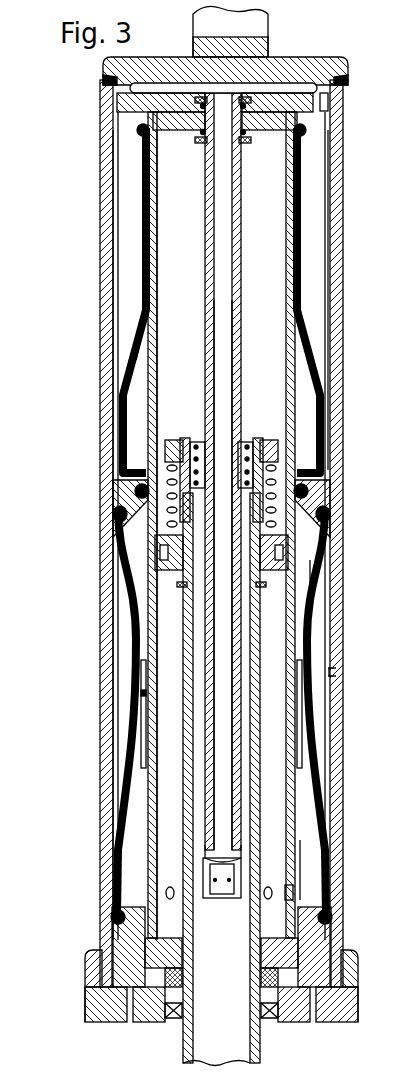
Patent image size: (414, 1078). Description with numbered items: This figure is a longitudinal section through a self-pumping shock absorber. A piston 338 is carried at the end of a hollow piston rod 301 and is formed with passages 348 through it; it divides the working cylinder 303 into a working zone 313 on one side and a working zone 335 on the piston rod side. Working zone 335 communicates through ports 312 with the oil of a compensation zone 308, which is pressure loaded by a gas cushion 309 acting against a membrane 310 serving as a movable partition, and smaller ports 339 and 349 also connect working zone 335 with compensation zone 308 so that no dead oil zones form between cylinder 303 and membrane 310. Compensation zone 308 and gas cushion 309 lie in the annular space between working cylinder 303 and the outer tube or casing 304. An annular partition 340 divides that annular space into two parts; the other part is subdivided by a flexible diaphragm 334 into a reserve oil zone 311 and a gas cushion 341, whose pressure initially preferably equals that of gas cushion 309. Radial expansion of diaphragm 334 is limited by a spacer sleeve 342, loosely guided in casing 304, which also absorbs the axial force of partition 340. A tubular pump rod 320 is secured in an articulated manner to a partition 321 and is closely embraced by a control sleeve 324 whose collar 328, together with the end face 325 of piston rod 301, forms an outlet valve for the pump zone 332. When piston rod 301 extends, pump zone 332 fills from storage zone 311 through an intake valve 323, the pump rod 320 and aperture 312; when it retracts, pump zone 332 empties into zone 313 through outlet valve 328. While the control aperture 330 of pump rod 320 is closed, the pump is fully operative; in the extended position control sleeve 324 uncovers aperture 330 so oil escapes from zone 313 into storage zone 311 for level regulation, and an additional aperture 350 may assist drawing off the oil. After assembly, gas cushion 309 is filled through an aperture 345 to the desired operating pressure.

The hollow piston rod 301 is at (188, 731).
The working cylinder 303 is at (155, 636).
The outer tube or casing 304 is at (108, 530).
The compensation zone 308 is at (303, 862).
The gas cushion 309 is at (322, 708).
The membrane 310 is at (312, 766).
The inner tube 311 is at (128, 168).
The apertures or ports 312 is at (325, 106).
The working zone 313 is at (176, 198).
The tubular pump rod 320 is at (207, 278).
The partition 321 is at (125, 97).
The intake valve 323 is at (225, 850).
The control sleeve 324 is at (245, 618).
The end face of piston rod 325 is at (185, 505).
The collar (outlet valve) 328 is at (265, 483).
The control aperture 330 is at (200, 455).
The pump zone 332 is at (218, 928).
The flexible diaphragm or membrane 334 is at (143, 258).
The working zone 335 is at (172, 681).
The piston 338 is at (158, 570).
The port or aperture 339 is at (335, 523).
The annular partition 340 is at (135, 505).
The gas cushion 341 is at (148, 384).
The spacer sleeve 342 is at (335, 302).
The aperture 345 is at (338, 673).
The passages 348 is at (272, 563).
The port or aperture 349 is at (130, 710).
The additional aperture 350 is at (207, 585).